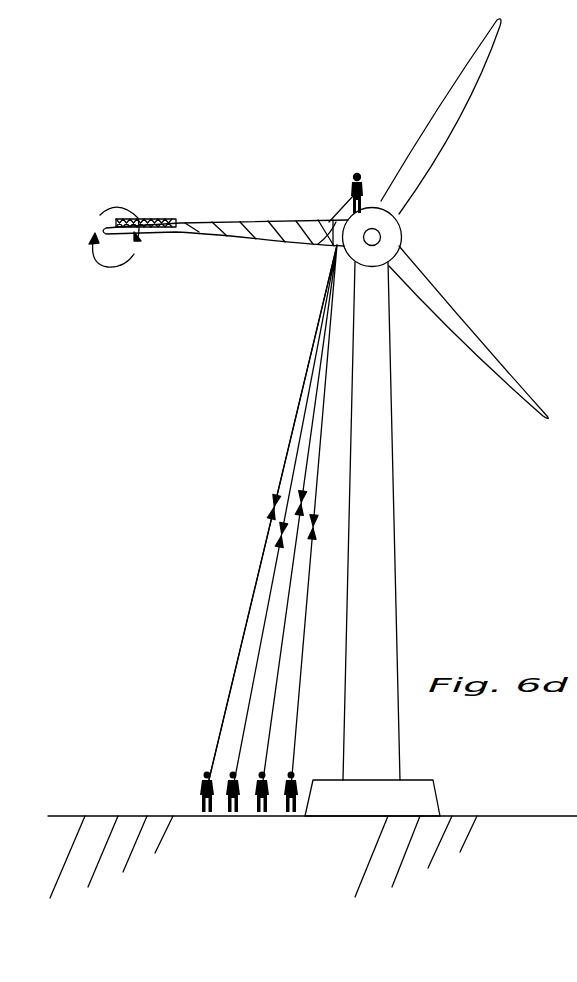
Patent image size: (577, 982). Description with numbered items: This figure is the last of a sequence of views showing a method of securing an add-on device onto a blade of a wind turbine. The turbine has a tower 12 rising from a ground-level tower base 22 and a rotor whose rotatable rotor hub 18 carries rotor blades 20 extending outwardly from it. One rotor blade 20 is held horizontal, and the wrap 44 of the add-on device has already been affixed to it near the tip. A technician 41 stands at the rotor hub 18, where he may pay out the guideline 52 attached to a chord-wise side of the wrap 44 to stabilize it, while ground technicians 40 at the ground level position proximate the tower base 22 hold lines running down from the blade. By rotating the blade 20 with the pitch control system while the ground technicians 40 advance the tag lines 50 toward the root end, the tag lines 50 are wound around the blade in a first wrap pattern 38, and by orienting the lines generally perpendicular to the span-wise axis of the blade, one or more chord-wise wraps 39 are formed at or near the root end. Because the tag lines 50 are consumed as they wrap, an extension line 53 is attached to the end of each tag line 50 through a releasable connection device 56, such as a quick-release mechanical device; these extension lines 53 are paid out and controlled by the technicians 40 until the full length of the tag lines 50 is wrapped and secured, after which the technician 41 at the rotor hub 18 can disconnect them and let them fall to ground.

The tower 12 is at (392, 485).
The rotor hub 18 is at (404, 229).
The rotor blade 20 is at (436, 113).
The tower base 22 is at (437, 797).
The first wrap pattern 38 is at (253, 231).
The chord-wise wrap 39 is at (333, 247).
The ground technician 40 is at (204, 786).
The technician 41 is at (351, 190).
The wrap 44 is at (146, 220).
The tag line 50 is at (294, 424).
The guideline 52 is at (342, 208).
The extension line 53 is at (243, 647).
The releasable connection device 56 is at (271, 508).